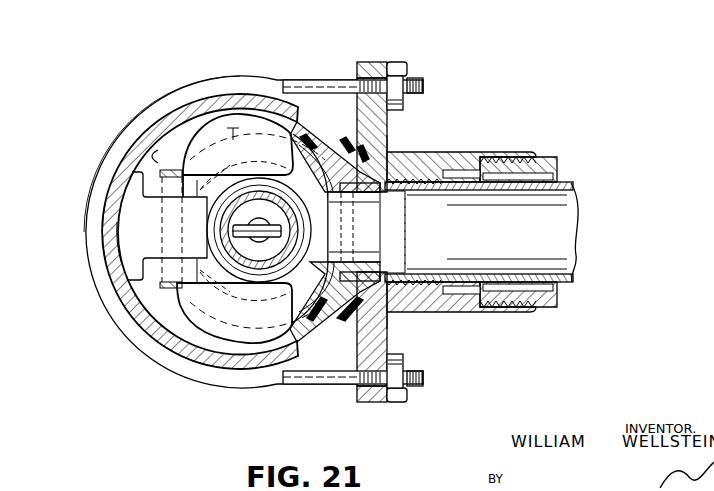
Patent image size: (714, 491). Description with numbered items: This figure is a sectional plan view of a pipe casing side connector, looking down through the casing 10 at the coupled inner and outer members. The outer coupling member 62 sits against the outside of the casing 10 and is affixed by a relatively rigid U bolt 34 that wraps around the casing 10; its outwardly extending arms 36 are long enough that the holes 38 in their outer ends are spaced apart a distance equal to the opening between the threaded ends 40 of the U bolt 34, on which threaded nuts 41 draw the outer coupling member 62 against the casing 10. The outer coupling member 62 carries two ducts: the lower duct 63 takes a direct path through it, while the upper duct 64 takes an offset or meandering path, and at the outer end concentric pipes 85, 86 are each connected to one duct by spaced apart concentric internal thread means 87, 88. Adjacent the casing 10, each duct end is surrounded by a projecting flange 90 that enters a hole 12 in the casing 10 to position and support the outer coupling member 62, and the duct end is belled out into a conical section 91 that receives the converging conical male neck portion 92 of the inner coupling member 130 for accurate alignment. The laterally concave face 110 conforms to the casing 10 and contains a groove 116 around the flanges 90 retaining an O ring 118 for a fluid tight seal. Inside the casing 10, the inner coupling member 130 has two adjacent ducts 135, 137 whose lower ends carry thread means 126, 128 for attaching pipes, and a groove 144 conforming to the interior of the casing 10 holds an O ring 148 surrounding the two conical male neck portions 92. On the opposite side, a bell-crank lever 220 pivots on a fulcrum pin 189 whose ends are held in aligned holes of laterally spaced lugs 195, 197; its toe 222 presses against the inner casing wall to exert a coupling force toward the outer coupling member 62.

The casing 10 is at (118, 137).
The hole 12 is at (334, 323).
The U bolt 34 is at (273, 82).
The outwardly extending arms 36 is at (377, 63).
The holes 38 is at (362, 84).
The threaded ends 40 is at (425, 86).
The threaded nuts 41 is at (401, 67).
The outer coupling member 62 is at (495, 316).
The lower duct 63 is at (541, 241).
The upper duct 64 is at (490, 173).
The concentric pipe 85 is at (575, 278).
The concentric pipe 86 is at (558, 165).
The internal thread means 87 is at (457, 170).
The internal thread means 88 is at (527, 160).
The flange 90 is at (293, 228).
The conical section 91 is at (386, 200).
The conical male neck portion 92 is at (400, 170).
The laterally concave face 110 is at (364, 290).
The groove 116 is at (388, 131).
The O ring 118 is at (389, 148).
The thread means 126 is at (277, 165).
The thread means 128 is at (203, 296).
The inner coupling member 130 is at (190, 325).
The duct 135 is at (213, 142).
The duct 137 is at (224, 333).
The groove 144 is at (303, 140).
The O ring 148 is at (322, 140).
The fulcrum pin 189 is at (162, 156).
The lug 195 is at (245, 169).
The lug 197 is at (153, 243).
The bell-crank lever 220 is at (113, 219).
The toe 222 is at (130, 272).